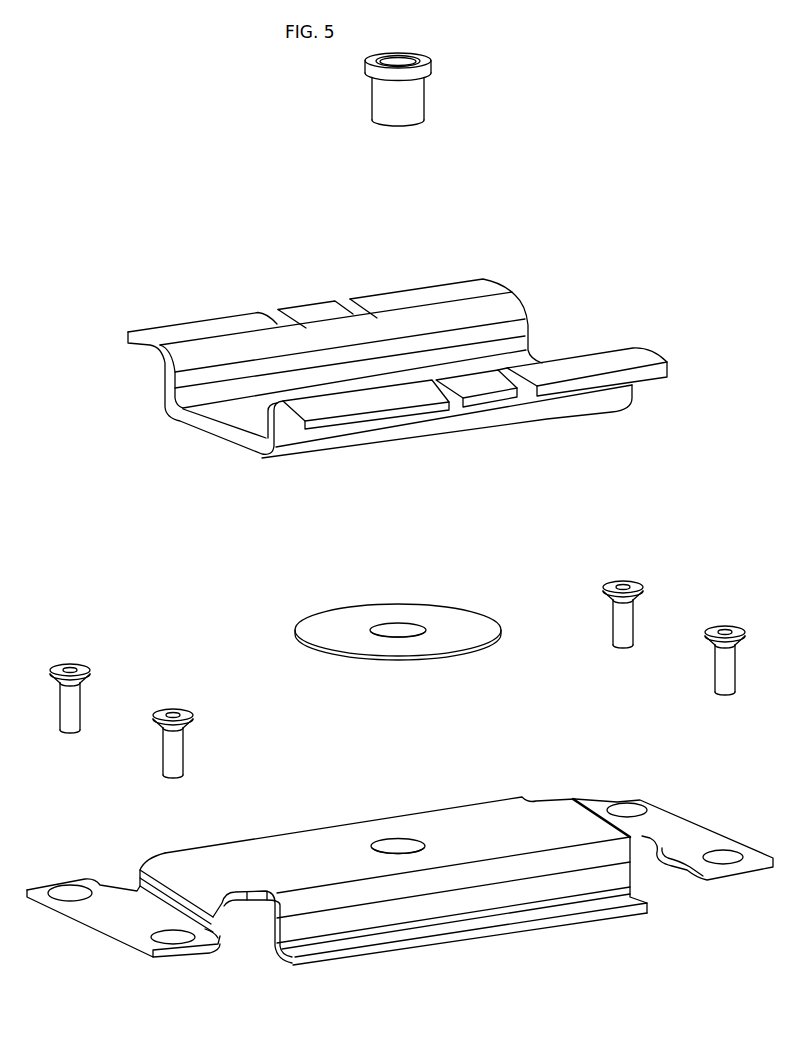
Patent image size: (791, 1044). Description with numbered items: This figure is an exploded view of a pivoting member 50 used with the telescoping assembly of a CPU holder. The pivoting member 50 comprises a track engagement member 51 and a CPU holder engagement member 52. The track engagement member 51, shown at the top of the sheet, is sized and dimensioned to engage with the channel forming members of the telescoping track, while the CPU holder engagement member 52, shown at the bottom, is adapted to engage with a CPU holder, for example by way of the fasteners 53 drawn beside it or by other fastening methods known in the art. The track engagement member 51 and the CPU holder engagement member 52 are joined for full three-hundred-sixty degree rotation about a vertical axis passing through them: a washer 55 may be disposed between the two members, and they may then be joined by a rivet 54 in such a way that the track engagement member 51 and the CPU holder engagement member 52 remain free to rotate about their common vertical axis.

The pivoting member 50 is at (153, 232).
The track engagement member 51 is at (502, 312).
The CPU holder engagement member 52 is at (472, 828).
The fasteners 53 is at (630, 617).
The rivet 54 is at (405, 100).
The washer 55 is at (340, 630).